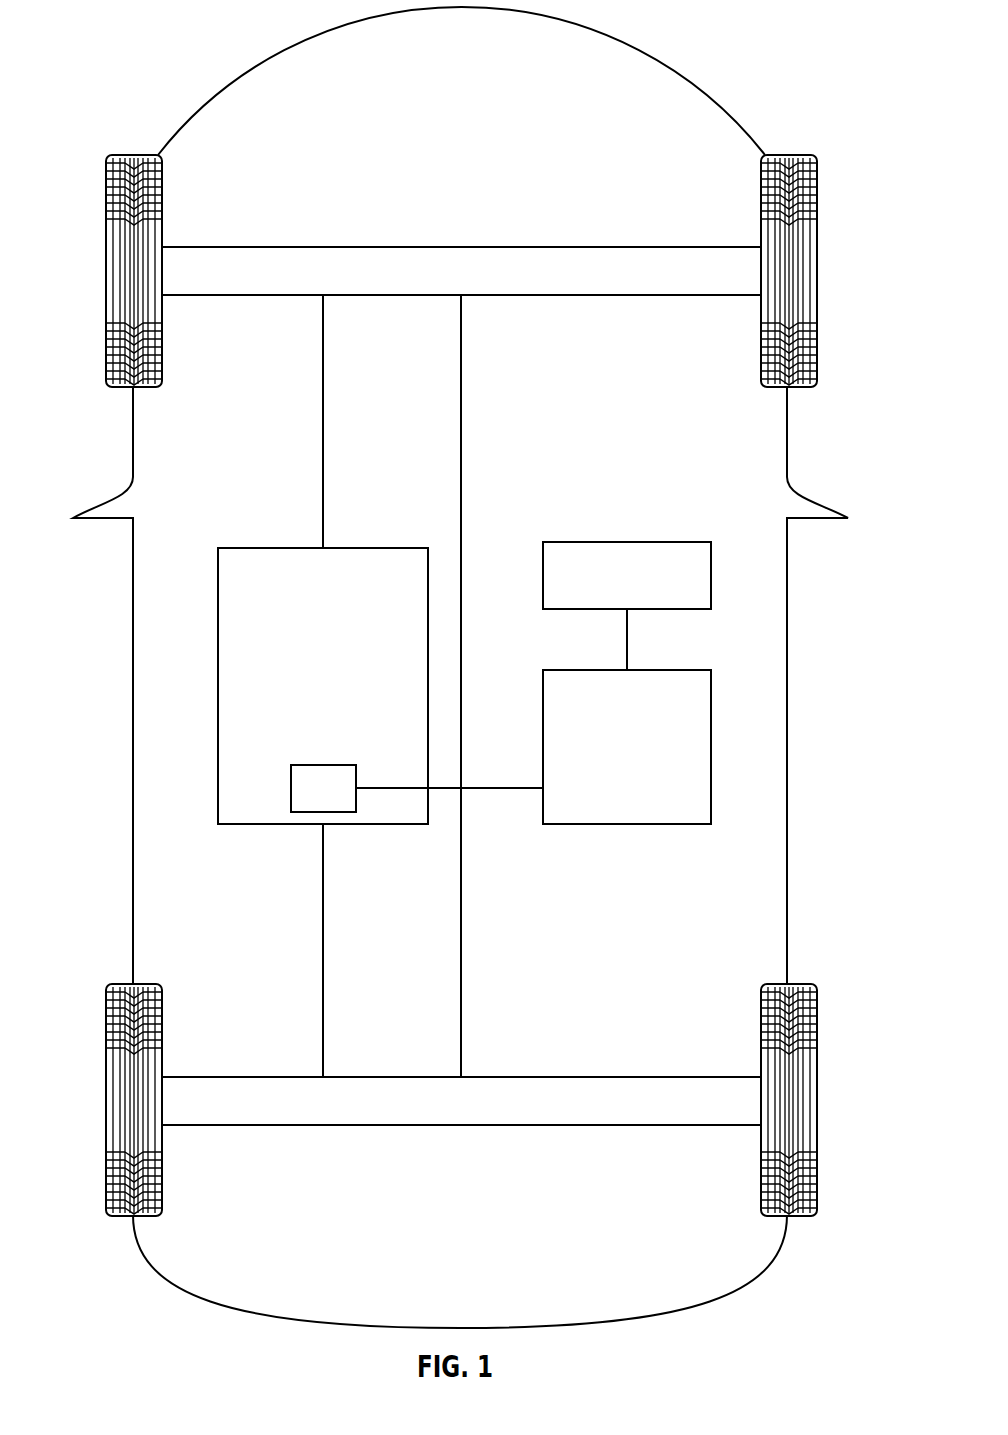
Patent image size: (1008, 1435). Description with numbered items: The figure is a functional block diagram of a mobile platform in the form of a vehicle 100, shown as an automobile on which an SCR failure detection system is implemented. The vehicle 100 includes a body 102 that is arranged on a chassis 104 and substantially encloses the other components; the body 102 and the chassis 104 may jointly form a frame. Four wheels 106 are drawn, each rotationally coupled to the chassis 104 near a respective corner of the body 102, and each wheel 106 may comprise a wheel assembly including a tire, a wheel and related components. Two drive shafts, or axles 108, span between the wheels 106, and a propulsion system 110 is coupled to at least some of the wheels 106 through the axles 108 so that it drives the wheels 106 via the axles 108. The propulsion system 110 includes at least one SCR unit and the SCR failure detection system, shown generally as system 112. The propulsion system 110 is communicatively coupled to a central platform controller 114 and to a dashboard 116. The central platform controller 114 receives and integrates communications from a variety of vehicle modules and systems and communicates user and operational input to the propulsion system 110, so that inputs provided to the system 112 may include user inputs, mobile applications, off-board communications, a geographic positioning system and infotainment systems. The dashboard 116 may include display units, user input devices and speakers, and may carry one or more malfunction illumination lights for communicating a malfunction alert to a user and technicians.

The vehicle 100 is at (138, 52).
The body 102 is at (134, 895).
The chassis 104 is at (461, 917).
The wheels 106 is at (105, 272).
The drive shafts (or axles) 108 is at (242, 247).
The propulsion system 110 is at (245, 548).
The SCR failure detection system 112 is at (345, 801).
The central platform controller 114 is at (684, 670).
The dashboard 116 is at (684, 542).